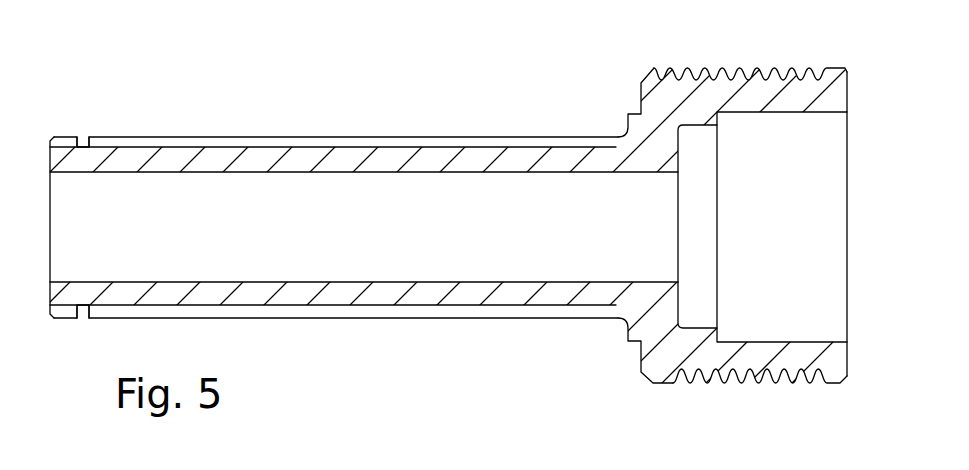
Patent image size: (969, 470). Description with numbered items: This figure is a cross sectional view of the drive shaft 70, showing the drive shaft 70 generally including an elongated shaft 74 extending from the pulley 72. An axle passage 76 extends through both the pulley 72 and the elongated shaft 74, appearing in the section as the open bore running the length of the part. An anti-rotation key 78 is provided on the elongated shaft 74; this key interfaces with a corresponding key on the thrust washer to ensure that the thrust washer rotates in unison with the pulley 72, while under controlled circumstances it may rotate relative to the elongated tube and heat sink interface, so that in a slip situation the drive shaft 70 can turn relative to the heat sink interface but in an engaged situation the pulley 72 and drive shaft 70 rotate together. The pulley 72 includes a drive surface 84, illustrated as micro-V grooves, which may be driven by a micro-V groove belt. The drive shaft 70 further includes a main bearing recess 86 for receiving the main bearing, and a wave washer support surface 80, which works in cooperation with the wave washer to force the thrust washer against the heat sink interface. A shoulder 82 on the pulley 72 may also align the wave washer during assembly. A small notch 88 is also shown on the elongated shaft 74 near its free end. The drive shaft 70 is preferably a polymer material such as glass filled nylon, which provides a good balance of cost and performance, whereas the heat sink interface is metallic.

The drive shaft 70 is at (373, 370).
The pulley 72 is at (794, 98).
The elongated shaft 74 is at (393, 137).
The axle passage 76 is at (302, 223).
The anti-rotation key 78 is at (481, 141).
The wave washer support surface 80 is at (641, 353).
The shoulder 82 is at (638, 112).
The drive surface 84 is at (772, 78).
The main bearing recess 86 is at (793, 135).
The notch 88 is at (80, 147).